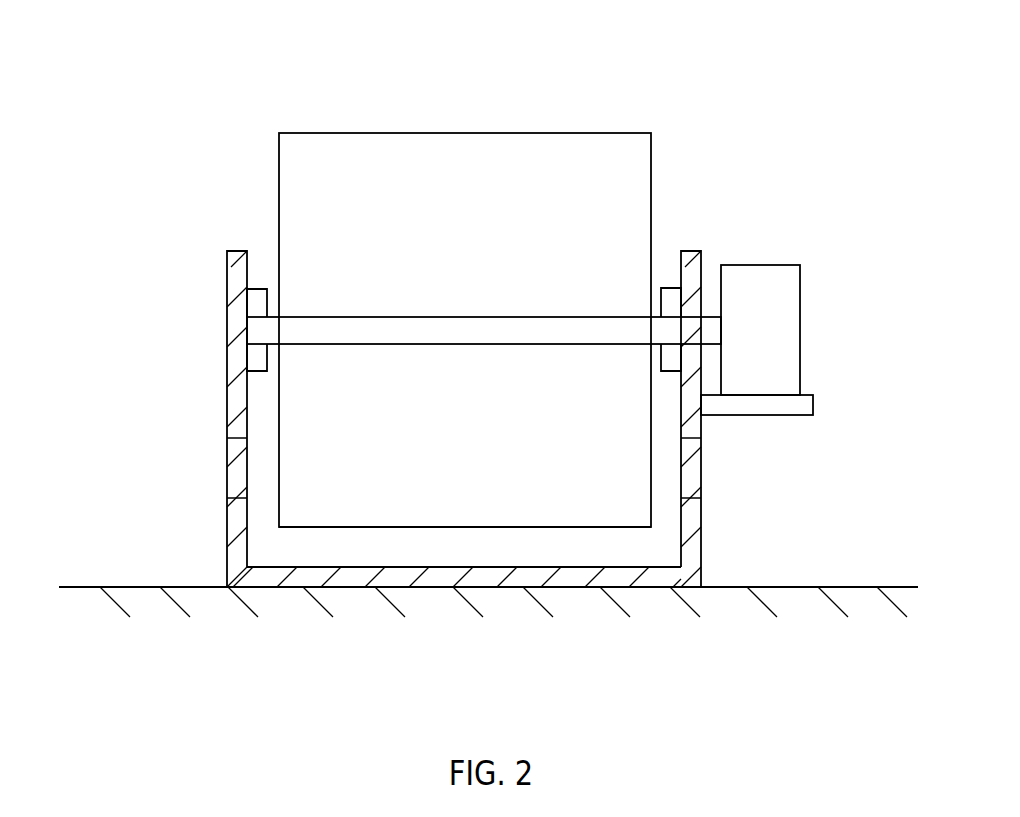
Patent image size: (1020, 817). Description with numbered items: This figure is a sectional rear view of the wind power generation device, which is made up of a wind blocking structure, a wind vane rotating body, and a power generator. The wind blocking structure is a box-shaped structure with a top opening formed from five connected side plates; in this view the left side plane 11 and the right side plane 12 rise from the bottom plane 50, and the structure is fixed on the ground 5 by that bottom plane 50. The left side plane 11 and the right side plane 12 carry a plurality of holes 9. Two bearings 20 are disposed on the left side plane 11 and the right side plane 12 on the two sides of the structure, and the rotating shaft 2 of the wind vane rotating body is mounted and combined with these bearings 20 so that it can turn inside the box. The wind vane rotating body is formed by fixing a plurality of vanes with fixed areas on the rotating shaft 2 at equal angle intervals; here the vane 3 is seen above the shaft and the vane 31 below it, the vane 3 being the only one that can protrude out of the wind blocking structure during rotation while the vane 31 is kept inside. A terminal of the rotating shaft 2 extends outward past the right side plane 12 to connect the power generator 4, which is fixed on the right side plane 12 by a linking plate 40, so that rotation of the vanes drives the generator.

The rotating shaft 2 is at (425, 330).
The vane 3 is at (475, 151).
The power generator 4 is at (780, 273).
The ground 5 is at (60, 587).
The holes 9 is at (235, 465).
The left side plane 11 is at (232, 252).
The right side plane 12 is at (684, 268).
The bearings 20 is at (256, 289).
The vane 31 is at (448, 520).
The linking plate 40 is at (803, 408).
The bottom plane 50 is at (307, 572).